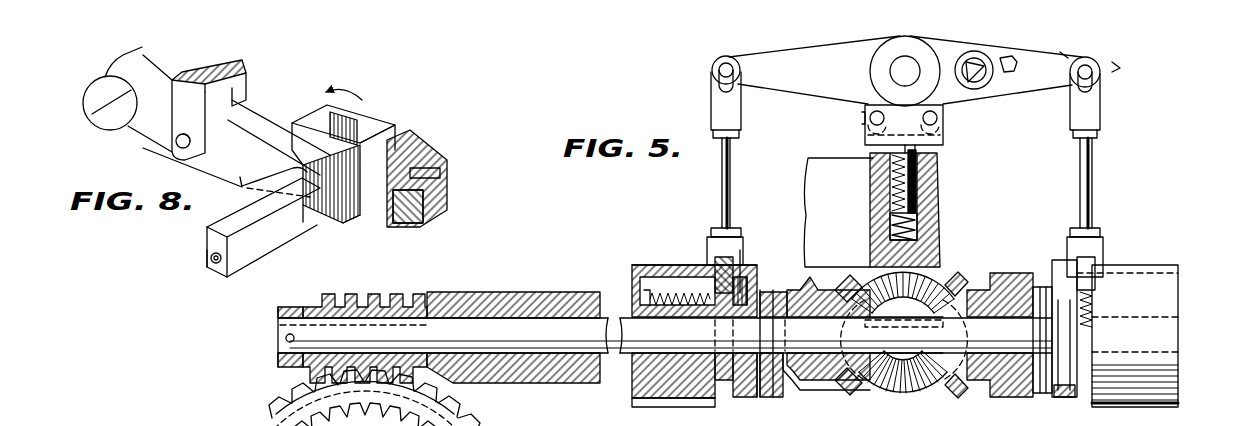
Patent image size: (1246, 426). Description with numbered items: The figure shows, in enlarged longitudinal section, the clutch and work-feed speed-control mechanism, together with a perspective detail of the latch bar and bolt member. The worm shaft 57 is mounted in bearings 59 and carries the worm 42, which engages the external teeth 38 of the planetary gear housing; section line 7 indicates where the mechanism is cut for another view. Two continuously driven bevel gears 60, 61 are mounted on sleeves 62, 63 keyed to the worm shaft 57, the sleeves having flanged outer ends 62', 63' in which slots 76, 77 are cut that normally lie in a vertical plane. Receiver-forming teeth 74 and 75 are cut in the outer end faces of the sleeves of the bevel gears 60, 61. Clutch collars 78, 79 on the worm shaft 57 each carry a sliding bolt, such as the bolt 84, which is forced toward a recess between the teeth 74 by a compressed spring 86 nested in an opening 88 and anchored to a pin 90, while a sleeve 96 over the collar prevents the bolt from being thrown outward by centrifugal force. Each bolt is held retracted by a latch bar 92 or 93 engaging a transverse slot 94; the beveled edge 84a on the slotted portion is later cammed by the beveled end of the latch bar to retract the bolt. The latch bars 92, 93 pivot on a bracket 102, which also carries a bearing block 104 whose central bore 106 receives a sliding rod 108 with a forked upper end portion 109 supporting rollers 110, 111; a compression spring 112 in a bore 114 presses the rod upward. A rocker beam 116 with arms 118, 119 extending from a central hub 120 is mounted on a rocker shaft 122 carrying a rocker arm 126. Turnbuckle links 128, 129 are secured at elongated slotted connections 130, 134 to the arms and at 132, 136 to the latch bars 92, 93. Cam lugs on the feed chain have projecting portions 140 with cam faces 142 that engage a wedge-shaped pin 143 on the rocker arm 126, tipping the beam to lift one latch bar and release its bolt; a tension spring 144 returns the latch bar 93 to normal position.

In FIG. 5, the section line 7- 7 is at (376, 275).
In FIG. 5, the external teeth 38 is at (457, 394).
In FIG. 5, the worm 42 is at (370, 296).
In FIG. 5, the worm shaft 57 is at (610, 362).
In FIG. 5, the bearings 59 is at (517, 293).
In FIG. 8, the bevel gear 60 is at (420, 148).
In FIG. 5, the bevel gear 60 is at (853, 380).
In FIG. 5, the bevel gear 61 is at (943, 394).
In FIG. 8, the sleeve 62 is at (431, 207).
In FIG. 5, the sleeve 62 is at (828, 323).
In FIG. 8, the flanged outer end 62' is at (450, 167).
In FIG. 5, the flanged outer end 62' is at (822, 389).
In FIG. 5, the sleeve 63 is at (1000, 286).
In FIG. 5, the flanged outer end 63' is at (1000, 387).
In FIG. 8, the teeth 74 is at (373, 124).
In FIG. 5, the teeth 74 is at (760, 398).
In FIG. 5, the teeth 75 is at (1048, 276).
In FIG. 8, the slot 76 is at (360, 224).
In FIG. 5, the slot 76 is at (772, 278).
In FIG. 5, the slot 77 is at (1043, 398).
In FIG. 5, the clutch collar 78 is at (660, 403).
In FIG. 5, the clutch collar 79 is at (1180, 391).
In FIG. 8, the sliding bolt 84 is at (281, 252).
In FIG. 5, the sliding bolt 84 is at (640, 284).
In FIG. 8, the beveled edge 84a is at (240, 198).
In FIG. 8, the compressed spring 86 is at (213, 268).
In FIG. 8, the opening 88 is at (186, 260).
In FIG. 5, the pin 90 is at (640, 314).
In FIG. 8, the latch bar 92 is at (250, 121).
In FIG. 5, the latch bar 92 is at (715, 264).
In FIG. 5, the latch bar 93 is at (1100, 265).
In FIG. 8, the transverse slot 94 is at (303, 224).
In FIG. 5, the transverse slot 94 is at (720, 278).
In FIG. 5, the sleeve 96 is at (705, 408).
In FIG. 5, the bracket 102 is at (820, 183).
In FIG. 5, the bearing block 104 is at (937, 208).
In FIG. 5, the central bore 106 is at (922, 177).
In FIG. 5, the sliding rod 108 is at (918, 192).
In FIG. 5, the forked upper end portion 109 is at (944, 136).
In FIG. 5, the roller 110 is at (862, 121).
In FIG. 5, the roller 111 is at (944, 119).
In FIG. 5, the compression spring 112 is at (918, 223).
In FIG. 5, the bore 114 is at (893, 201).
In FIG. 5, the rocker beam 116 is at (837, 103).
In FIG. 5, the arm 118 is at (778, 56).
In FIG. 5, the arm 119 is at (1041, 57).
In FIG. 5, the central hub 120 is at (862, 43).
In FIG. 5, the rocker shaft 122 is at (890, 71).
In FIG. 5, the rocker arm 126 is at (957, 93).
In FIG. 8, the turnbuckle link 128 is at (207, 73).
In FIG. 5, the turnbuckle link 128 is at (718, 202).
In FIG. 5, the turnbuckle link 129 is at (1088, 196).
In FIG. 5, the elongated slotted connection 130 is at (717, 71).
In FIG. 8, the connection 132 is at (175, 131).
In FIG. 5, the connection 132 is at (747, 261).
In FIG. 5, the elongated slotted connection 134 is at (1100, 78).
In FIG. 5, the connection 136 is at (1070, 254).
In FIG. 5, the projecting portion 140 is at (1017, 72).
In FIG. 5, the cam face 142 is at (1012, 57).
In FIG. 5, the wedge shaped pin 143 is at (979, 60).
In FIG. 5, the tension spring 144 is at (1097, 308).